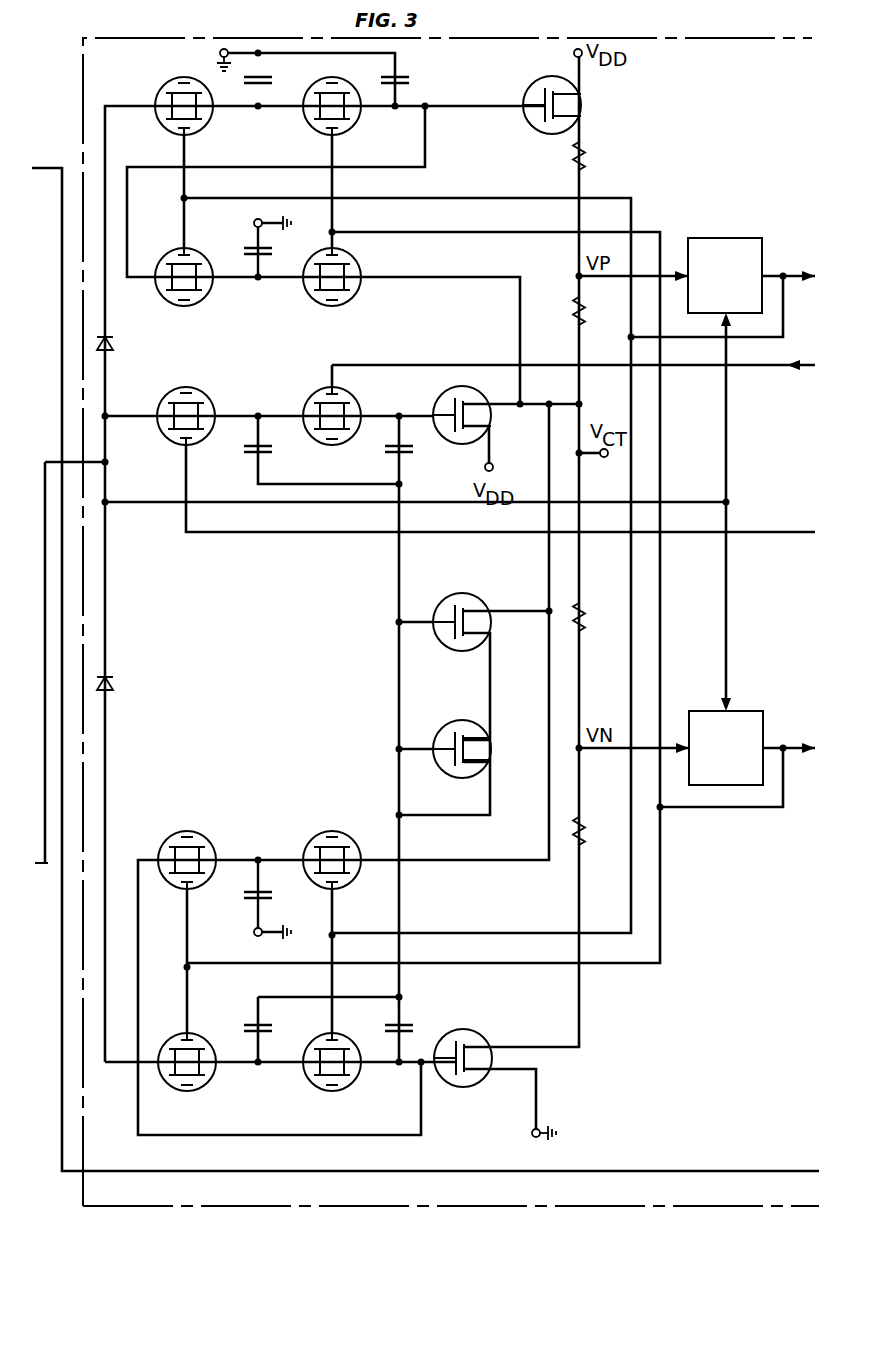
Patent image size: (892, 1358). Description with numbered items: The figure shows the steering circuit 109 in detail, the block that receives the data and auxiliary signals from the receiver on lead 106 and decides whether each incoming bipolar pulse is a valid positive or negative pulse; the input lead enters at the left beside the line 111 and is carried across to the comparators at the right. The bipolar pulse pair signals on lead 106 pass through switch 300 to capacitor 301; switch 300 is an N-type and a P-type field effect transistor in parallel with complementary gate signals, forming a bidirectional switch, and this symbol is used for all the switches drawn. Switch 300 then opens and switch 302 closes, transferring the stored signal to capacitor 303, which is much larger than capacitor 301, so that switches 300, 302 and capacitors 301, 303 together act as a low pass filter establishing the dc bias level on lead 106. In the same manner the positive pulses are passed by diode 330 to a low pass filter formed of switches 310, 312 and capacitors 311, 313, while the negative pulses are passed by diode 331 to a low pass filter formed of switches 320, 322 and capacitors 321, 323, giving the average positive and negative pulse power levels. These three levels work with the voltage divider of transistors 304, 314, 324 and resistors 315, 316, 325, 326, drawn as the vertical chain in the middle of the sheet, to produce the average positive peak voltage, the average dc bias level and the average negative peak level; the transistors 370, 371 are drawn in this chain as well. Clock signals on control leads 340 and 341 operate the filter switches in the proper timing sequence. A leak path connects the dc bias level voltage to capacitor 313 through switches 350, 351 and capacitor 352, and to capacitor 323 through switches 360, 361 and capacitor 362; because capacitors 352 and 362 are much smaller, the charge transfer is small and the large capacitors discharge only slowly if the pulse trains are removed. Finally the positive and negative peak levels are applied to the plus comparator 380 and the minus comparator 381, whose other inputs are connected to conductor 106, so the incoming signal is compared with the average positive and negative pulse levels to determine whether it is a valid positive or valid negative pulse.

The steering circuit 109 is at (451, 622).
The lead 106 is at (42, 866).
The line 111 is at (42, 168).
The switch 300 is at (160, 432).
The capacitor 301 is at (246, 456).
The switch 302 is at (314, 392).
The capacitor 303 is at (388, 454).
The transistor 304 is at (438, 398).
The switch 310 is at (163, 85).
The capacitor 311 is at (270, 84).
The switch 312 is at (304, 118).
The capacitor 313 is at (406, 81).
The transistor 314 is at (534, 87).
The resistor 315 is at (572, 156).
The resistor 316 is at (572, 314).
The switch 320 is at (193, 1092).
The capacitor 321 is at (250, 1020).
The switch 322 is at (338, 1092).
The capacitor 323 is at (412, 1018).
The transistor 324 is at (463, 1088).
The resistor 325 is at (586, 824).
The resistor 326 is at (586, 618).
The diode 330 is at (114, 343).
The diode 331 is at (114, 683).
The control lead 340 is at (768, 367).
The control lead 341 is at (788, 532).
The switch 350 is at (356, 298).
The switch 351 is at (205, 298).
The capacitor 352 is at (252, 243).
The switch 360 is at (332, 831).
The switch 361 is at (187, 831).
The capacitor 362 is at (274, 896).
The transistor 370 is at (472, 593).
The transistor 371 is at (448, 720).
The plus comparator 380 is at (727, 238).
The minus comparator 381 is at (748, 711).